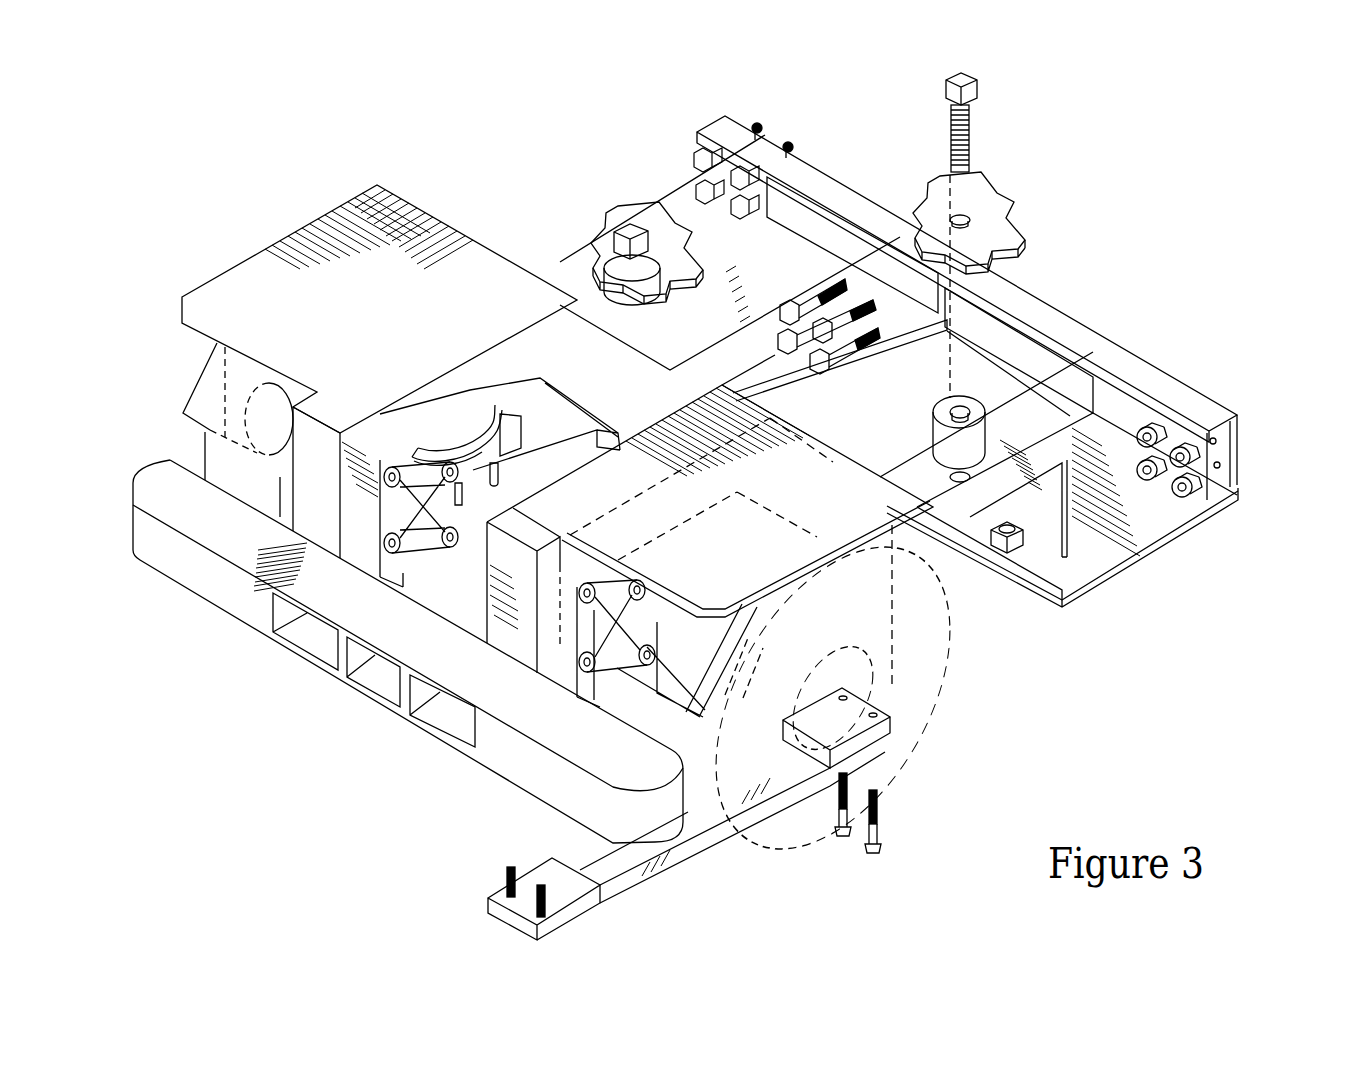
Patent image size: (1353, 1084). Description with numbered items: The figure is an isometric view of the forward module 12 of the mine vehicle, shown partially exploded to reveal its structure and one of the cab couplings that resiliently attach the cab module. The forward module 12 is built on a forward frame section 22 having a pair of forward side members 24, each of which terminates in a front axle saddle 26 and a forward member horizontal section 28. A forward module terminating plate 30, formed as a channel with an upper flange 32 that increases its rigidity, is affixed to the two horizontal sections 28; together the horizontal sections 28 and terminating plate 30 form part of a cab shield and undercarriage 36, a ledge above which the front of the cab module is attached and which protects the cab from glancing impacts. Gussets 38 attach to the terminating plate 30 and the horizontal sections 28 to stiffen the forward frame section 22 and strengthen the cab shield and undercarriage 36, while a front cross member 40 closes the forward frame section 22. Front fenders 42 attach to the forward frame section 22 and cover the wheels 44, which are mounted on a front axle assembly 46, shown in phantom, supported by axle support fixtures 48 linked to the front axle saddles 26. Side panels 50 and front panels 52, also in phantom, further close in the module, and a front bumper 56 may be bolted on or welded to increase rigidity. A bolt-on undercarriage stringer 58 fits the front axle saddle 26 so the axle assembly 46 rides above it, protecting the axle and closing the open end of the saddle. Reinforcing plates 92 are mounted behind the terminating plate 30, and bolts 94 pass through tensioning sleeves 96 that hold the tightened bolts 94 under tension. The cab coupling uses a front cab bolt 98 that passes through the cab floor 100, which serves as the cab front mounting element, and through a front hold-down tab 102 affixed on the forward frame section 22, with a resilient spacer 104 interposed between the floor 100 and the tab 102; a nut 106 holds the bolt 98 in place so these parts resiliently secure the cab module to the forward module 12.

The forward module 12 is at (305, 135).
The forward frame section 22 is at (1152, 294).
The forward side members 24 is at (850, 222).
The front axle saddle 26 is at (585, 483).
The forward member horizontal section 28 is at (812, 245).
The forward module terminating plate 30 is at (1181, 376).
The upper flange 32 is at (1208, 422).
The cab shield and undercarriage 36 is at (652, 177).
The gussets 38 is at (888, 335).
The front cross member 40 is at (455, 628).
The front fenders 42 is at (220, 292).
The wheels 44 is at (905, 740).
The front axle assembly 46 is at (483, 540).
The axle support fixtures 48 is at (490, 427).
The side panels 50 is at (662, 672).
The front panels 52 is at (268, 460).
The front bumper 56 is at (507, 770).
The undercarriage stringers 58 is at (698, 848).
The reinforcing plates 92 is at (1219, 453).
The bolts 94 is at (789, 147).
The tensioning sleeves 96 is at (1202, 495).
The front cab bolts 98 is at (624, 238).
The floor 100 is at (1001, 205).
The front hold-down tabs 102 is at (965, 512).
The resilient spacers 104 is at (987, 410).
The nuts 106 is at (1062, 608).